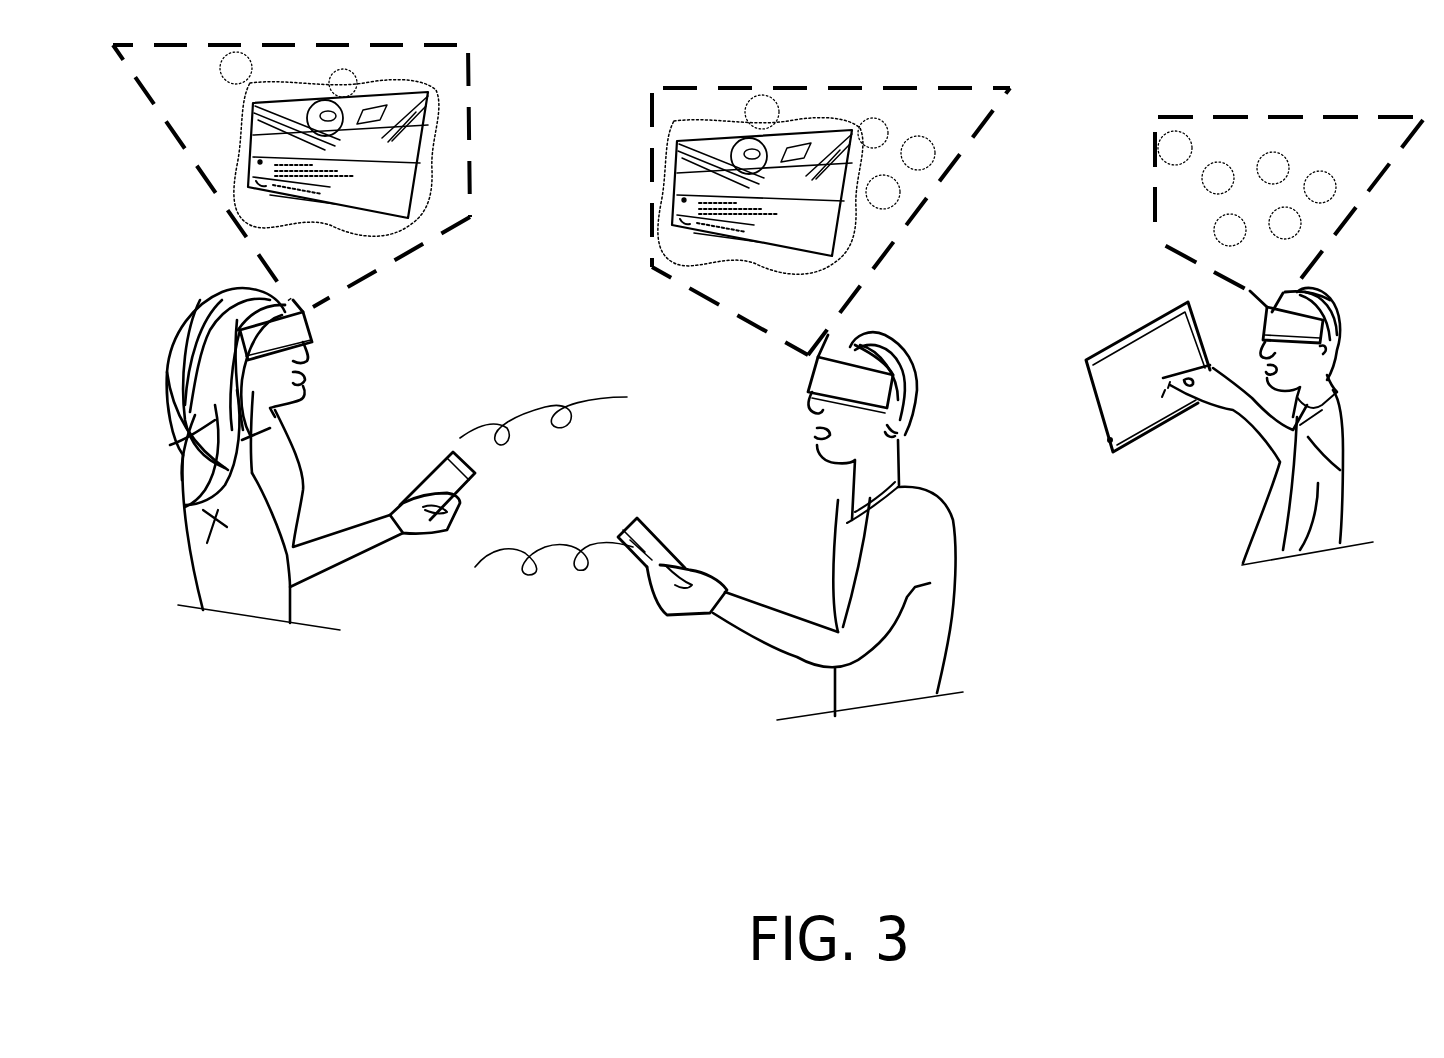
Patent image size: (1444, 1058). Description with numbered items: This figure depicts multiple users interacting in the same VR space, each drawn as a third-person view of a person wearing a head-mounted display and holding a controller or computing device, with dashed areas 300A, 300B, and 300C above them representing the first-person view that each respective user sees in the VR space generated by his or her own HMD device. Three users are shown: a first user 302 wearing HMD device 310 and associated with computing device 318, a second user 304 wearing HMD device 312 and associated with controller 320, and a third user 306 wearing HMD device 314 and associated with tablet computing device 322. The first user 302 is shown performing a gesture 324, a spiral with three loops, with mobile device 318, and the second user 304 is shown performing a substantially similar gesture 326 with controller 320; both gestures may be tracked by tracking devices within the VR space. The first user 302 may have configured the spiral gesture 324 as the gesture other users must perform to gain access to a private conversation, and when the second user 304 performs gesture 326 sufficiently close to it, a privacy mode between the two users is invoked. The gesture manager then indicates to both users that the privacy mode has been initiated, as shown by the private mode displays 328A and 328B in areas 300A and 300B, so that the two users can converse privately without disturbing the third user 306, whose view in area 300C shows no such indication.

The area 300A is at (291, 176).
The area 300B is at (831, 221).
The area 300C is at (1289, 207).
The first user 302 is at (187, 310).
The second user 304 is at (927, 338).
The third user 306 is at (1374, 408).
The HMD device 310 is at (336, 333).
The HMD device 312 is at (785, 369).
The HMD device 314 is at (1260, 330).
The computing device 318 is at (427, 450).
The controller 320 is at (623, 503).
The tablet computing device 322 is at (1108, 345).
The gesture 324 is at (525, 404).
The gesture 326 is at (550, 585).
The privacy mode indication 328A is at (336, 158).
The privacy mode indication 328B is at (760, 196).